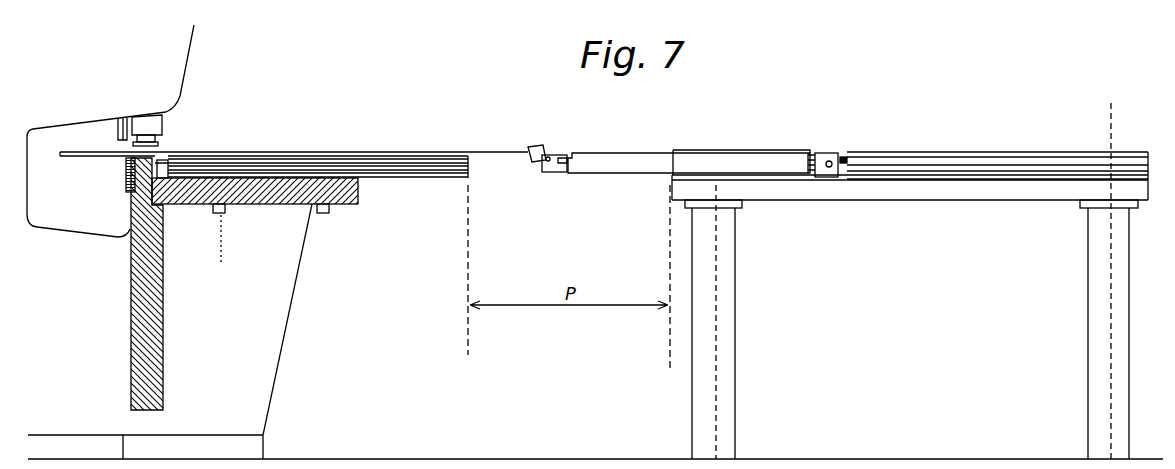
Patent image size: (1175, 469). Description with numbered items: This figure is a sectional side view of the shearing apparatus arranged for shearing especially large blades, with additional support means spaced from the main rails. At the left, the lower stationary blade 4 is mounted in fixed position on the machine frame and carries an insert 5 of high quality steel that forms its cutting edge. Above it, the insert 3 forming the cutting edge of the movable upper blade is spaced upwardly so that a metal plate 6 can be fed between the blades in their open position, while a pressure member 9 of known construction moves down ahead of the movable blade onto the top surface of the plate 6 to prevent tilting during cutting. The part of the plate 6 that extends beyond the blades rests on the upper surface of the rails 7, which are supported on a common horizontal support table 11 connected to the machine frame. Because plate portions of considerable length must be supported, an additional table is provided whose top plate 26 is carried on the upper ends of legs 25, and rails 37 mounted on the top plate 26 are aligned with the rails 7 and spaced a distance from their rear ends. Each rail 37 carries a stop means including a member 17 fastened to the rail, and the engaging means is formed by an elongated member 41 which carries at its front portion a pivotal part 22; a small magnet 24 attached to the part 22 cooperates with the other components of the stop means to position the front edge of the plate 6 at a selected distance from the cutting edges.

The insert 3 is at (116, 130).
The lower stationary blade 4 is at (138, 328).
The insert 5 is at (130, 186).
The metal plate 6 is at (498, 152).
The rails 7 is at (420, 170).
The pressure member 9 is at (157, 123).
The support table 11 is at (283, 193).
The stop member 17 is at (822, 155).
The pivotal part 22 is at (537, 147).
The magnet 24 is at (563, 165).
The legs 25 is at (728, 390).
The top plate 26 is at (955, 196).
The rails 37 is at (948, 168).
The elongated member 41 is at (638, 158).